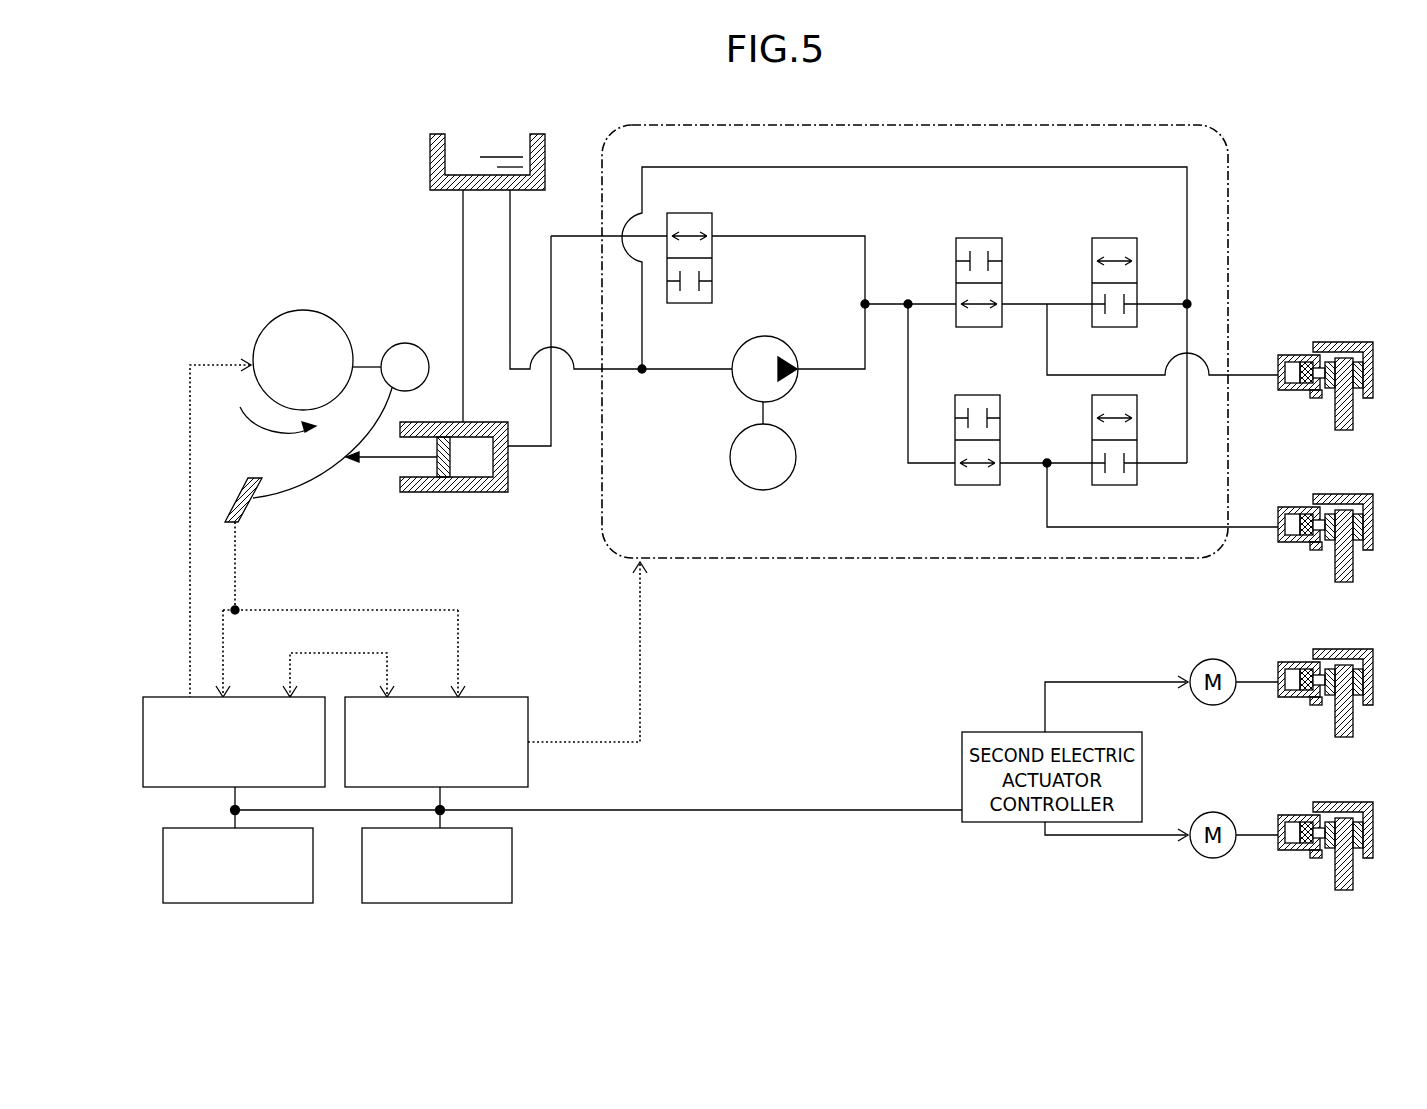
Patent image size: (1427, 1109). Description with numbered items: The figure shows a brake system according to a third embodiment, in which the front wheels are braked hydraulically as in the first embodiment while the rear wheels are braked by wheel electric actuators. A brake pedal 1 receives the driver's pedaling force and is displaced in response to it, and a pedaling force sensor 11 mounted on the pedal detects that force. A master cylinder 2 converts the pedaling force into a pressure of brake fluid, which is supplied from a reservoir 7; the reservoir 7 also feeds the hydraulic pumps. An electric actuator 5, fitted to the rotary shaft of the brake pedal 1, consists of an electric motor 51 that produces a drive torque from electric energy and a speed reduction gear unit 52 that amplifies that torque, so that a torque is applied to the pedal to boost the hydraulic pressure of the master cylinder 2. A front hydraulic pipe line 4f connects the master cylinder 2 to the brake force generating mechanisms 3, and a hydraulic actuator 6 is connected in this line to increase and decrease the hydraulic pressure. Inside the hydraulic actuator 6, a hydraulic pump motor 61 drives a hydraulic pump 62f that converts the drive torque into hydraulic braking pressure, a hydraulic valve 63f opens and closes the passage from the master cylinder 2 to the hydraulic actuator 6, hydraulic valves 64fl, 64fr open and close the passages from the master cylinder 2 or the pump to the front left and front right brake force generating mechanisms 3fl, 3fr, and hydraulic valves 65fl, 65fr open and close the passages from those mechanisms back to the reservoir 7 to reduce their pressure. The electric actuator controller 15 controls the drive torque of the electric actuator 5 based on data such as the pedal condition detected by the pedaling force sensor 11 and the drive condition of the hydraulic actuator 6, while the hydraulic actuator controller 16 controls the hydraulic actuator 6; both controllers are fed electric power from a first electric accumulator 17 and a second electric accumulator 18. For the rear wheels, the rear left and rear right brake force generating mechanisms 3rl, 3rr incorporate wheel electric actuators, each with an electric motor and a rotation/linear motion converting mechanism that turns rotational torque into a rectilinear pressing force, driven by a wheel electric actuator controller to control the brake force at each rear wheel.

The brake pedal 1 is at (286, 493).
The master cylinder 2 is at (487, 492).
The brake force generating mechanisms 3 is at (1339, 265).
The front left brake force generating mechanism 3fl is at (1350, 342).
The front right brake force generating mechanism 3fr is at (1350, 494).
The rear left brake force generating mechanism 3rl is at (1350, 649).
The rear right brake force generating mechanism 3rr is at (1350, 802).
The front hydraulic pipe line 4f is at (583, 236).
The electric actuator 5 is at (297, 265).
The electric motor 51 is at (258, 326).
The speed reduction gear unit 52 is at (400, 344).
The hydraulic actuator 6 is at (602, 479).
The hydraulic pump motor 61 is at (796, 470).
The front hydraulic pump 62f is at (790, 348).
The front hydraulic valve 63f is at (712, 226).
The front left hydraulic valve 64fl is at (956, 239).
The front right hydraulic valve 64fr is at (955, 396).
The front left pressure reducing hydraulic valve 65fl is at (1092, 239).
The front right pressure reducing hydraulic valve 65fr is at (1092, 410).
The reservoir 7 is at (430, 169).
The pedaling force sensor 11 is at (246, 515).
The electric actuator controller 15 is at (178, 697).
The hydraulic actuator controller 16 is at (490, 697).
The first electric accumulator 17 is at (163, 858).
The second electric accumulator 18 is at (512, 872).